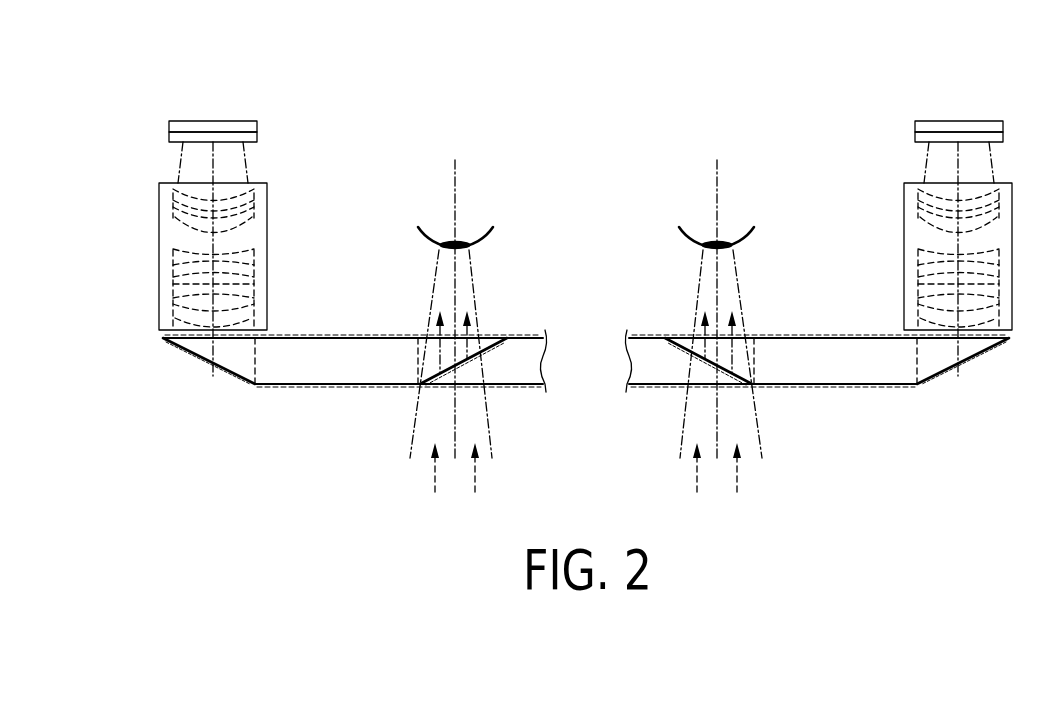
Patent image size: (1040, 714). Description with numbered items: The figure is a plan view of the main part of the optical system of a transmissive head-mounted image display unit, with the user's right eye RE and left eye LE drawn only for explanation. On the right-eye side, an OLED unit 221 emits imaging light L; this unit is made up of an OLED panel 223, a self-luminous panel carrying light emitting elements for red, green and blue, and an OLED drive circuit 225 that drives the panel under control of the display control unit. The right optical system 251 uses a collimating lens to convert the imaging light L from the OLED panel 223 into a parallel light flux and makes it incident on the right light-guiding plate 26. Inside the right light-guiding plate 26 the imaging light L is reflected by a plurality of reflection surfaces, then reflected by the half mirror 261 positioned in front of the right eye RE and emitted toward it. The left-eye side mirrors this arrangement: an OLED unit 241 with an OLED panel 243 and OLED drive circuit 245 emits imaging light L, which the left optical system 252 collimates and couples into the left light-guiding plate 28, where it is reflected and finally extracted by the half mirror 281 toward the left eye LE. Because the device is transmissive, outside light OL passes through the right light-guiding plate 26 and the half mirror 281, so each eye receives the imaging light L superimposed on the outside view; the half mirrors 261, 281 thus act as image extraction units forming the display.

The OLED unit 221 is at (281, 112).
The OLED panel 223 is at (257, 137).
The OLED drive circuit 225 is at (229, 121).
The right optical system 251 is at (267, 205).
The right light-guiding plate 26 is at (252, 386).
The half mirror 261 is at (463, 363).
The OLED unit 241 is at (890, 116).
The OLED panel 243 is at (915, 138).
The OLED drive circuit 245 is at (937, 122).
The left optical system 252 is at (905, 205).
The left light-guiding plate 28 is at (920, 386).
The half mirror 281 is at (709, 363).
The right eye RE is at (483, 236).
The left eye LE is at (689, 236).
The imaging light L is at (213, 165).
The outside light OL is at (432, 468).